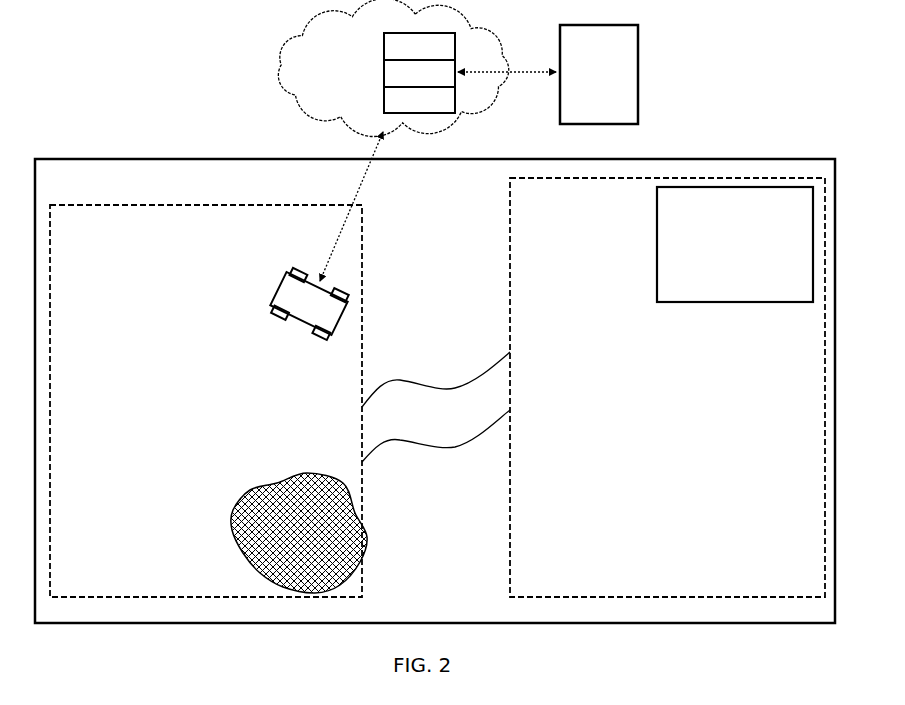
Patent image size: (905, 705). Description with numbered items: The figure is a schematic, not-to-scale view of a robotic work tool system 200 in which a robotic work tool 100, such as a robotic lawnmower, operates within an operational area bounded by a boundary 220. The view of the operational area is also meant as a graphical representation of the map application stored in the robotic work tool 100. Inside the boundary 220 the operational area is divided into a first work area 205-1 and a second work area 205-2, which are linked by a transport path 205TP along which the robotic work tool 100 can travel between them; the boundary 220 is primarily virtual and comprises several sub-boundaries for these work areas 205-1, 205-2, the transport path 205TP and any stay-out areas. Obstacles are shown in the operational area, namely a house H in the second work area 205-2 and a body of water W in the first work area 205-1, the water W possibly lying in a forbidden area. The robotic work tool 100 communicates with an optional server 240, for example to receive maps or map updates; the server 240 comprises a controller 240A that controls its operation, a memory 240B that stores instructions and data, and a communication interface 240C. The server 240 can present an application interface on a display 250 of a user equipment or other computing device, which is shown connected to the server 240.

The robotic work tool system 200 is at (99, 118).
The work area 205-1 is at (206, 401).
The work area 205-2 is at (667, 387).
The transport path 205TP is at (436, 407).
The robotic work tool 100 is at (308, 303).
The boundary 220 is at (693, 626).
The server 240 is at (393, 68).
The controller 240A is at (419, 46).
The memory 240B is at (419, 73).
The communication interface 240C is at (419, 100).
The display 250 is at (599, 74).
The house obstacle H is at (735, 244).
The water obstacle W is at (299, 533).